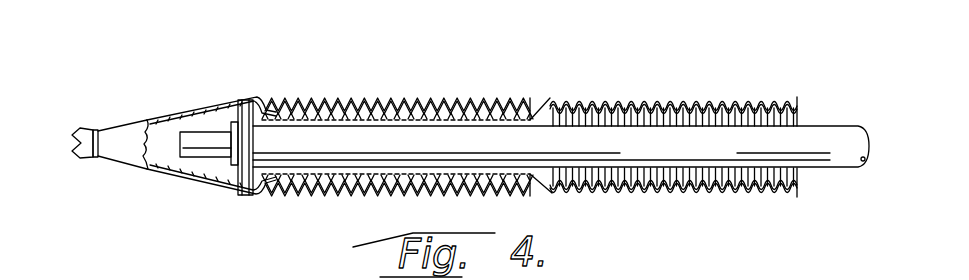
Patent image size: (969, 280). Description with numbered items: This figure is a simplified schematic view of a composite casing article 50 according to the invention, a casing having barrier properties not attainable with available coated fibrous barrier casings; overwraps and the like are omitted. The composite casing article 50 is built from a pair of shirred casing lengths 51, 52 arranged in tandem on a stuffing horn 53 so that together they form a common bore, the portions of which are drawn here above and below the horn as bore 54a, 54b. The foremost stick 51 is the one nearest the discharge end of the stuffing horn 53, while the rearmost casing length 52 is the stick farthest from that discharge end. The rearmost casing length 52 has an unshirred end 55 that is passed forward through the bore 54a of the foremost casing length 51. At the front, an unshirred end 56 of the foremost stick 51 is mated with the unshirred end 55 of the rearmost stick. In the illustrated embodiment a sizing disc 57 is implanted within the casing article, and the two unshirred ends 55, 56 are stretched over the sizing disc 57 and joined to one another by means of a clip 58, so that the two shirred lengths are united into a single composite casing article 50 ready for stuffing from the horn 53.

The composite casing article 50 is at (514, 137).
The foremost shirred casing length 51 is at (402, 95).
The rearmost shirred casing length 52 is at (685, 97).
The stuffing horn 53 is at (842, 128).
The bore of the foremost casing length 54a is at (345, 173).
The lower bellows section 54b is at (693, 172).
The unshirred end of the rearmost casing length 55 is at (291, 129).
The unshirred end of the foremost stick 56 is at (171, 115).
The sizing disc 57 is at (226, 109).
The clip 58 is at (91, 128).